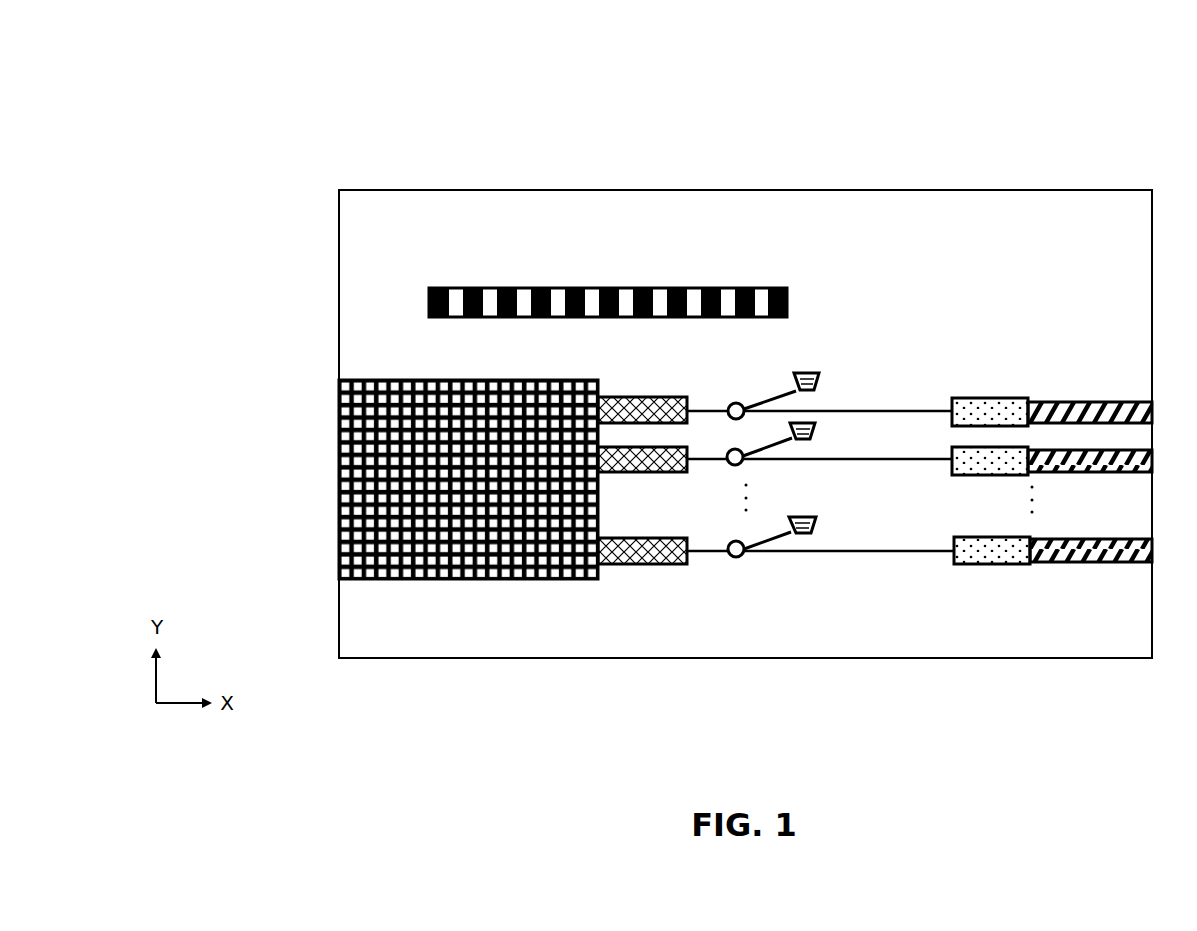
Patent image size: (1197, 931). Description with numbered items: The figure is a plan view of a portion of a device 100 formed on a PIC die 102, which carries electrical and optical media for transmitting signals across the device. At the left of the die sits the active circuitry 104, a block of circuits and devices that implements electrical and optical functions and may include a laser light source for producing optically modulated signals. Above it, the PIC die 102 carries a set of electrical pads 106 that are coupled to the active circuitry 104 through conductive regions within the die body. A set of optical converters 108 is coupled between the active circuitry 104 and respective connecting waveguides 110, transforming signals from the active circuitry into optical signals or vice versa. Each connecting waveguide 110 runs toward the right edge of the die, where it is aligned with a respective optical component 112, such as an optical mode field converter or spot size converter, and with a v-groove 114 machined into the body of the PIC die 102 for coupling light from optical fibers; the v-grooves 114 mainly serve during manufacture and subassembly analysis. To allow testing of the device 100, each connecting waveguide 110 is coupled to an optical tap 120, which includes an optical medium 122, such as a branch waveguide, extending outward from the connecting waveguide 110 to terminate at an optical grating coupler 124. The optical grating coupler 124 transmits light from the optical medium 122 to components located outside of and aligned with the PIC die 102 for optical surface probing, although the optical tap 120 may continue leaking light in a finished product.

The device 100 is at (426, 112).
The PIC die 102 is at (543, 633).
The active circuitry 104 is at (366, 537).
The set of electrical pads 106 is at (716, 290).
The set of optical converters 108 is at (647, 397).
The connecting waveguide 110 is at (900, 411).
The optical component 112 is at (985, 400).
The v-groove 114 is at (1068, 404).
The optical tap 120 is at (739, 403).
The optical medium 122 is at (782, 395).
The optical grating coupler 124 is at (808, 372).